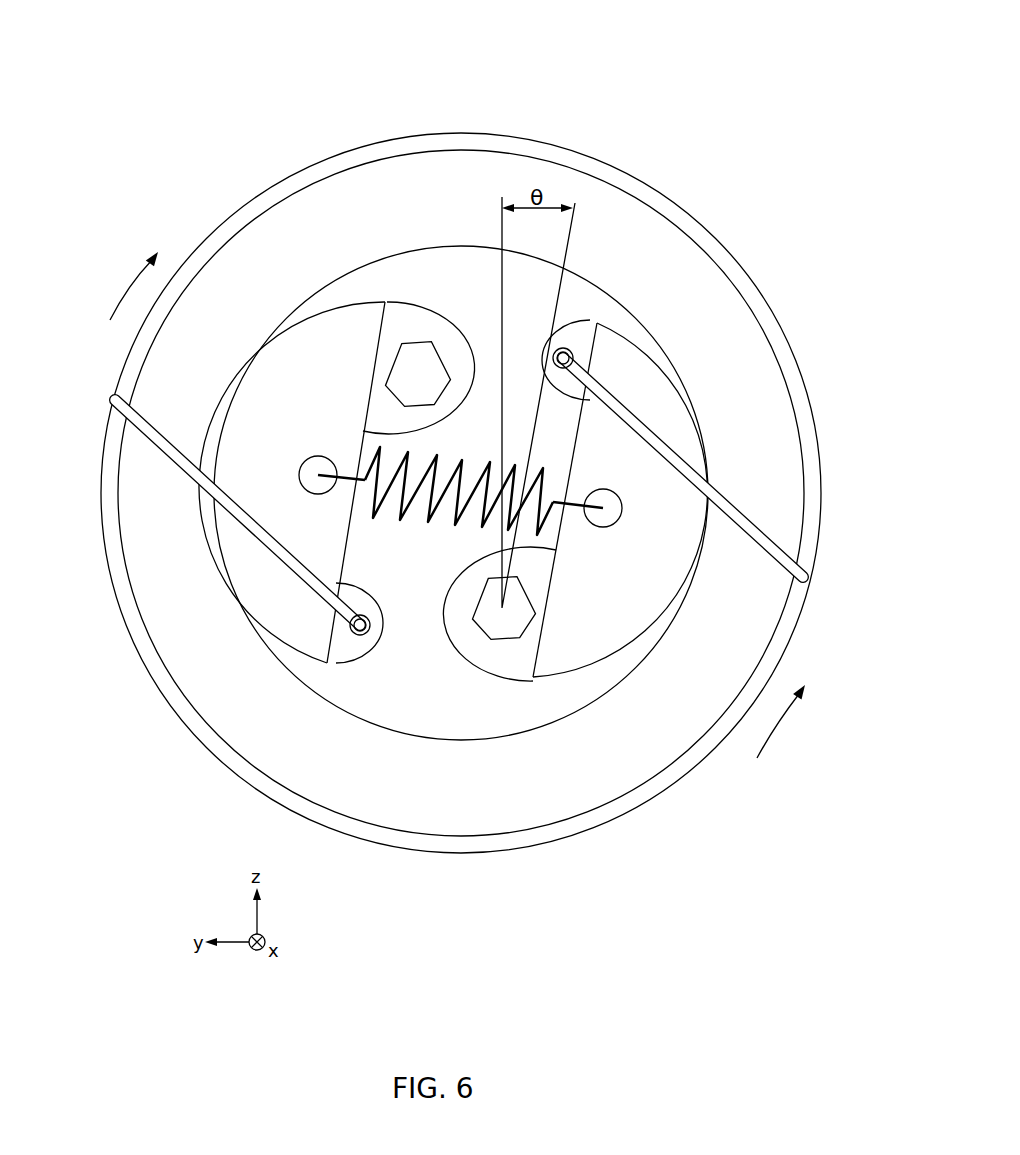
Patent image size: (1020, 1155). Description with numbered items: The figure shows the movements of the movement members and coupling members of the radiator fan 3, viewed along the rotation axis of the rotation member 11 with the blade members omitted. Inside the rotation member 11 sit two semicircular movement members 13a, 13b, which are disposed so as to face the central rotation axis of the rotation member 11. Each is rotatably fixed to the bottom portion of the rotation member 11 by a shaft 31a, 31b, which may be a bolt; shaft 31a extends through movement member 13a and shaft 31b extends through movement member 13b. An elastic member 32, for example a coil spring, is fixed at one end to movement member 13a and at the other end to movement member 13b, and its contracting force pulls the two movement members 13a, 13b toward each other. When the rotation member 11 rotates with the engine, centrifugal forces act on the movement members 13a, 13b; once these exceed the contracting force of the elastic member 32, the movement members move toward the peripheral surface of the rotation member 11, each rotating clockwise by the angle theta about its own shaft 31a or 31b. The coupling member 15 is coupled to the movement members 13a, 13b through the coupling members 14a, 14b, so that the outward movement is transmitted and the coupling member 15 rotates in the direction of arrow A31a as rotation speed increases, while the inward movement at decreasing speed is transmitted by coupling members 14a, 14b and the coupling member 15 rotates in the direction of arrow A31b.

The radiator fan 3 is at (470, 53).
The rotation member 11 is at (405, 246).
The movement member 13a is at (310, 642).
The movement member 13b is at (600, 343).
The coupling member 14a is at (160, 457).
The coupling member 14b is at (743, 517).
The coupling member 15 is at (463, 133).
The shaft 31a is at (418, 377).
The shaft 31b is at (505, 605).
The elastic member 32 is at (427, 523).
The arrow A31a is at (128, 290).
The arrow A31b is at (783, 720).